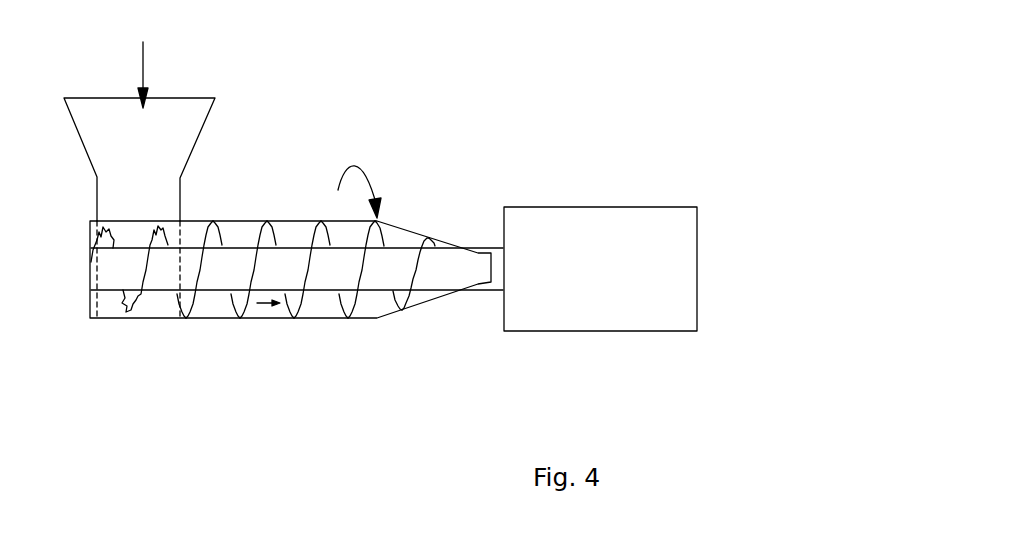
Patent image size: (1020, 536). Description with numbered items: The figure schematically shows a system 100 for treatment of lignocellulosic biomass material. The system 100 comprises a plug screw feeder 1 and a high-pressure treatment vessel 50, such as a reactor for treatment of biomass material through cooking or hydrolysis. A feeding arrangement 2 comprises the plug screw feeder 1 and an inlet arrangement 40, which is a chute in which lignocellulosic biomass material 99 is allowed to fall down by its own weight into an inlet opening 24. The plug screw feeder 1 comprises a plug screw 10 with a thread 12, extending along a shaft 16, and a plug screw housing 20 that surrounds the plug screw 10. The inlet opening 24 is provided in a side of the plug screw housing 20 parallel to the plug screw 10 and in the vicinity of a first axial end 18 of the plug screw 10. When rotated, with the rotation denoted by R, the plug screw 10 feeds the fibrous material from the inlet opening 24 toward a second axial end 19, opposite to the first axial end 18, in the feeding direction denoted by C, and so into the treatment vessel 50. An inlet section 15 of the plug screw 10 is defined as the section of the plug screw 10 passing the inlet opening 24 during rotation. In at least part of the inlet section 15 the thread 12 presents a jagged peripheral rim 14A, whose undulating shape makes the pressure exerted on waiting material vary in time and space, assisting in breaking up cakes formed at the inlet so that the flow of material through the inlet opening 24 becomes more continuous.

The system 100 is at (500, 66).
The feeding arrangement 2 is at (280, 128).
The inlet arrangement 40 is at (198, 120).
The lignocellulosic biomass material 99 is at (129, 72).
The plug screw housing 20 is at (374, 318).
The first axial end 18 is at (92, 318).
The inlet opening 24 is at (141, 220).
The plug screw 10 is at (262, 262).
The thread 12 is at (313, 240).
The jagged peripheral rim 14A is at (160, 228).
The shaft 16 is at (458, 258).
The second axial end 19 is at (486, 255).
The high-pressure treatment vessel 50 is at (642, 225).
The rotation R is at (369, 192).
The feeding direction C is at (270, 321).
The inlet section 15 is at (148, 336).
The plug screw feeder 1 is at (243, 345).